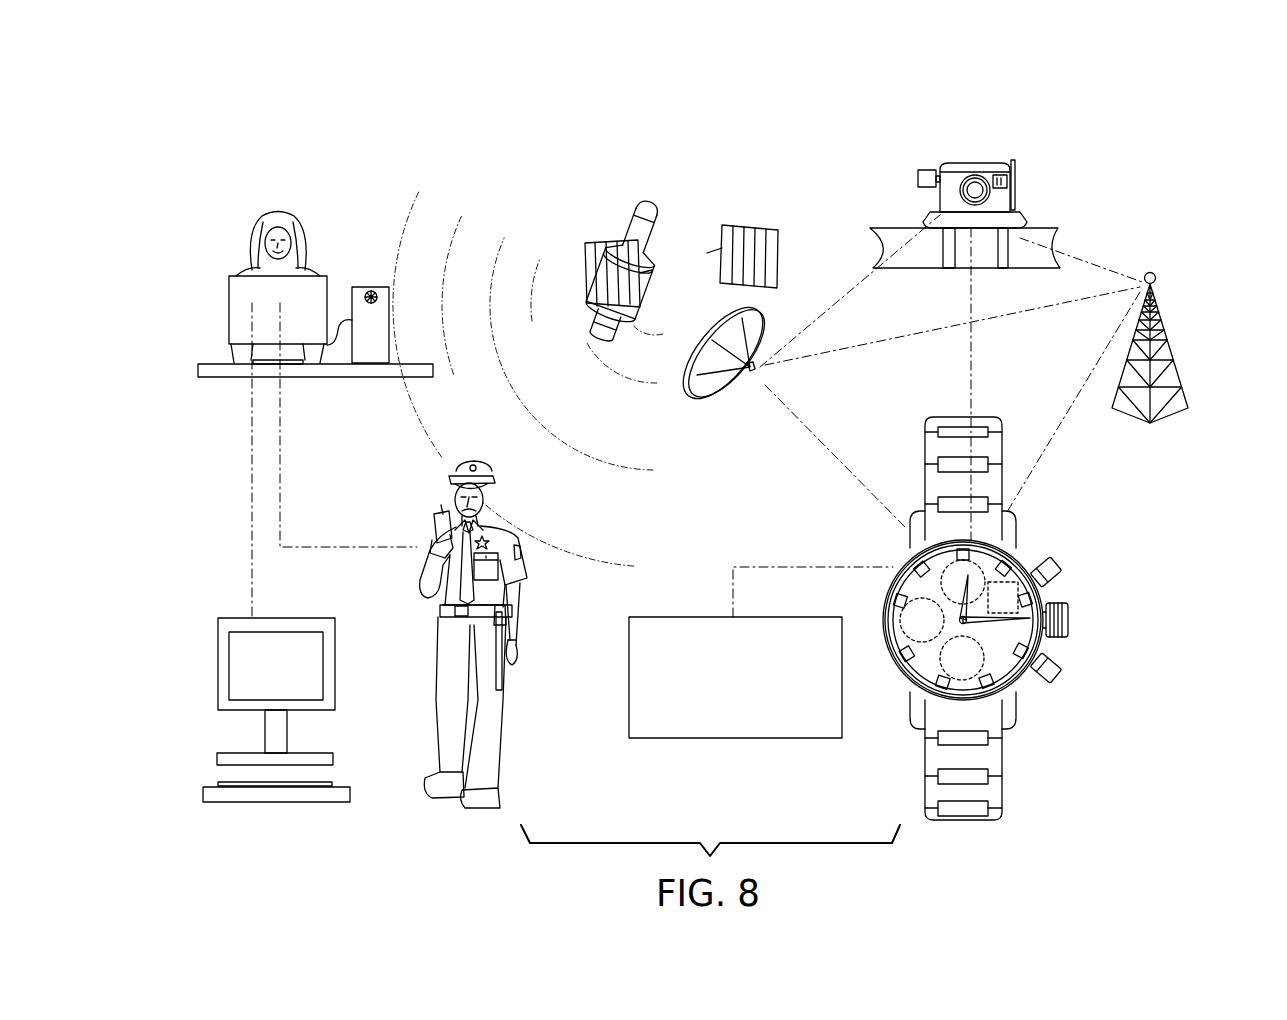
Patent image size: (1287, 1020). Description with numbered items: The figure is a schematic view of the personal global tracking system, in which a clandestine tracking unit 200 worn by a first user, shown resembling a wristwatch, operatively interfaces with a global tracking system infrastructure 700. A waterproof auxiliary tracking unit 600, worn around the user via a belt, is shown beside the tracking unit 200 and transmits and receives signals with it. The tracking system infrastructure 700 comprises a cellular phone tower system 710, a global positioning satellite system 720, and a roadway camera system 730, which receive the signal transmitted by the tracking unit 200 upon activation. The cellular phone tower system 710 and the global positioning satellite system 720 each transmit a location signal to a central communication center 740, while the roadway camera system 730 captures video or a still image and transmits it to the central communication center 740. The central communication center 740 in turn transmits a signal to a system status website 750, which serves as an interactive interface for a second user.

The tracking system infrastructure 700 is at (415, 130).
The central communication center 740 is at (243, 200).
The system status website 750 is at (228, 617).
The global positioning satellite system 720 is at (682, 230).
The roadway camera system 730 is at (1013, 190).
The cellular phone tower system 710 is at (1168, 427).
The auxiliary tracking unit 600 is at (690, 612).
The tracking unit 200 is at (1018, 702).